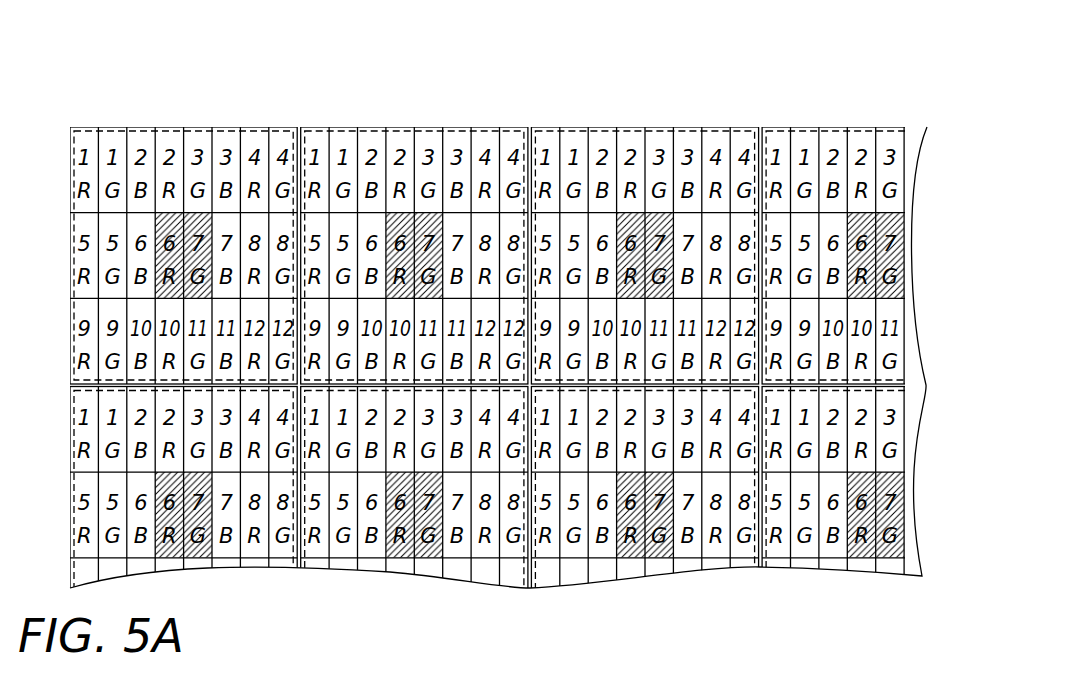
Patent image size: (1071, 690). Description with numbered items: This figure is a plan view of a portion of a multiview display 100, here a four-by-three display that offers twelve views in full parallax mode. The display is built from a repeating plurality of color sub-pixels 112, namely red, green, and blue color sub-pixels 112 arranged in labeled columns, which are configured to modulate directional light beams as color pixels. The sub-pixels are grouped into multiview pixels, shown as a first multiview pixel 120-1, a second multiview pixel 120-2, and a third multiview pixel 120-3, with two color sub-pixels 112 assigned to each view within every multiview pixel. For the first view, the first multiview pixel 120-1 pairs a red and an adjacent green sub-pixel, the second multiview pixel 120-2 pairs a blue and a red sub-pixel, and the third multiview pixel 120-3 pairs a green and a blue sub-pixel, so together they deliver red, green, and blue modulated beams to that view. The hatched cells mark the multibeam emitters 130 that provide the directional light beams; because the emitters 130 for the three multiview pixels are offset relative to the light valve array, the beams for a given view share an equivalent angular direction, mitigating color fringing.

The multiview display 100 is at (796, 48).
The color sub-pixel 112 is at (833, 135).
The first multiview pixel 120-1 is at (70, 112).
The second multiview pixel 120-2 is at (301, 112).
The third multiview pixel 120-3 is at (760, 112).
The multibeam emitter 130 is at (207, 300).